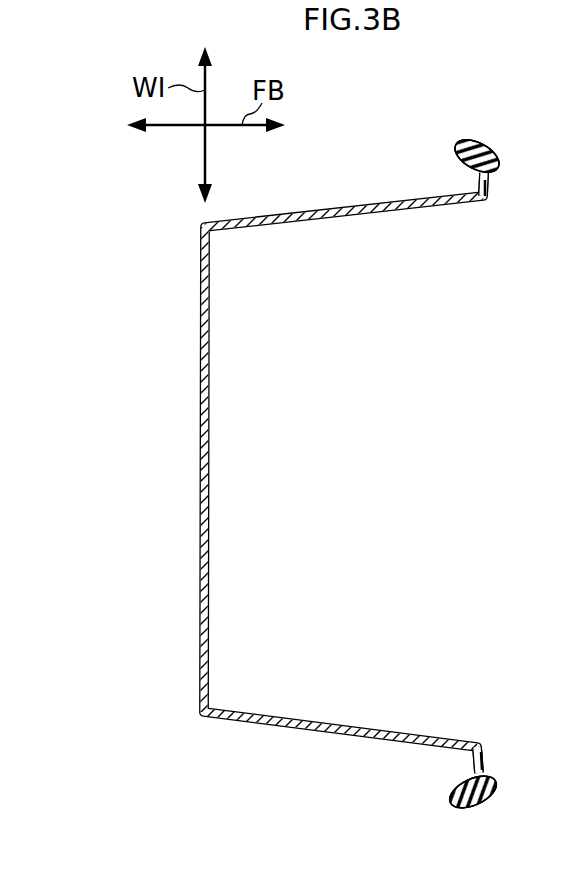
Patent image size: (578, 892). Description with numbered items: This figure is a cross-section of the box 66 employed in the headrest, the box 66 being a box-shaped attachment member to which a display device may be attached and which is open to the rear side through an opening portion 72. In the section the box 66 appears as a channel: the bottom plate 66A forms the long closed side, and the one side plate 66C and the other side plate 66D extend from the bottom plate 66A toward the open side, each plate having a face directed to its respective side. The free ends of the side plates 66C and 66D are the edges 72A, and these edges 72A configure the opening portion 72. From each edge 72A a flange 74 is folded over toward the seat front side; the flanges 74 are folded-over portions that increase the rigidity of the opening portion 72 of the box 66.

The headrest box 66 is at (279, 477).
The bottom plate 66A is at (200, 422).
The one side plate 66C is at (342, 735).
The another side plate 66D is at (333, 208).
The opening portion 72 is at (473, 428).
The edge 72A is at (487, 200).
The flange 74 is at (500, 152).